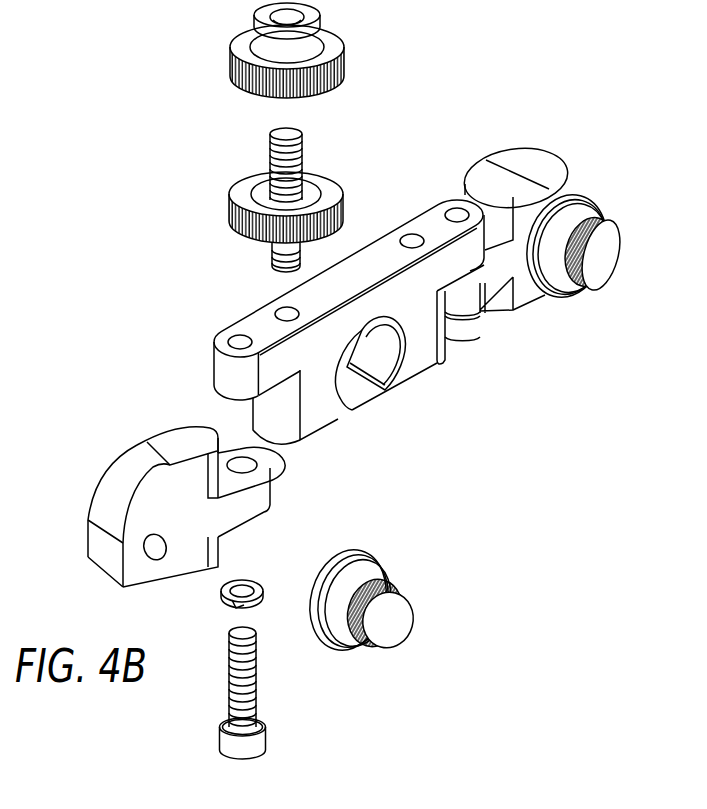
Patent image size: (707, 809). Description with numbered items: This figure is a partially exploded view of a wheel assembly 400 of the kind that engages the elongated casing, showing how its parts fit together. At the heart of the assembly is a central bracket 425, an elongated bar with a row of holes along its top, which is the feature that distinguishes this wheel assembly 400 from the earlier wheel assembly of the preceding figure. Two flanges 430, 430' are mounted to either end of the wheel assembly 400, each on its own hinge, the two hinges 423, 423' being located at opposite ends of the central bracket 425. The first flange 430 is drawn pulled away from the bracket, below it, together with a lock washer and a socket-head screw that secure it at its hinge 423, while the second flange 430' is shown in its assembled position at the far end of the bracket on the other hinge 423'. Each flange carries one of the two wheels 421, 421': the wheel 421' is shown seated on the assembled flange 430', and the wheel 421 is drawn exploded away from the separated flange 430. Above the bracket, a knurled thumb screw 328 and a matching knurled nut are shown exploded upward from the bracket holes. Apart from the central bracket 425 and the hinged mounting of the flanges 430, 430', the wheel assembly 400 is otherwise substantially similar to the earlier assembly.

The threaded knurled thumb screw 328 is at (302, 157).
The wheel assembly 400 is at (427, 410).
The wheel 421 is at (406, 631).
The wheel 421' is at (576, 195).
The hinge 423 is at (317, 300).
The hinge 423' is at (499, 292).
The central bracket 425 is at (323, 410).
The hinged flange 430 is at (155, 507).
The hinged flange 430' is at (520, 149).